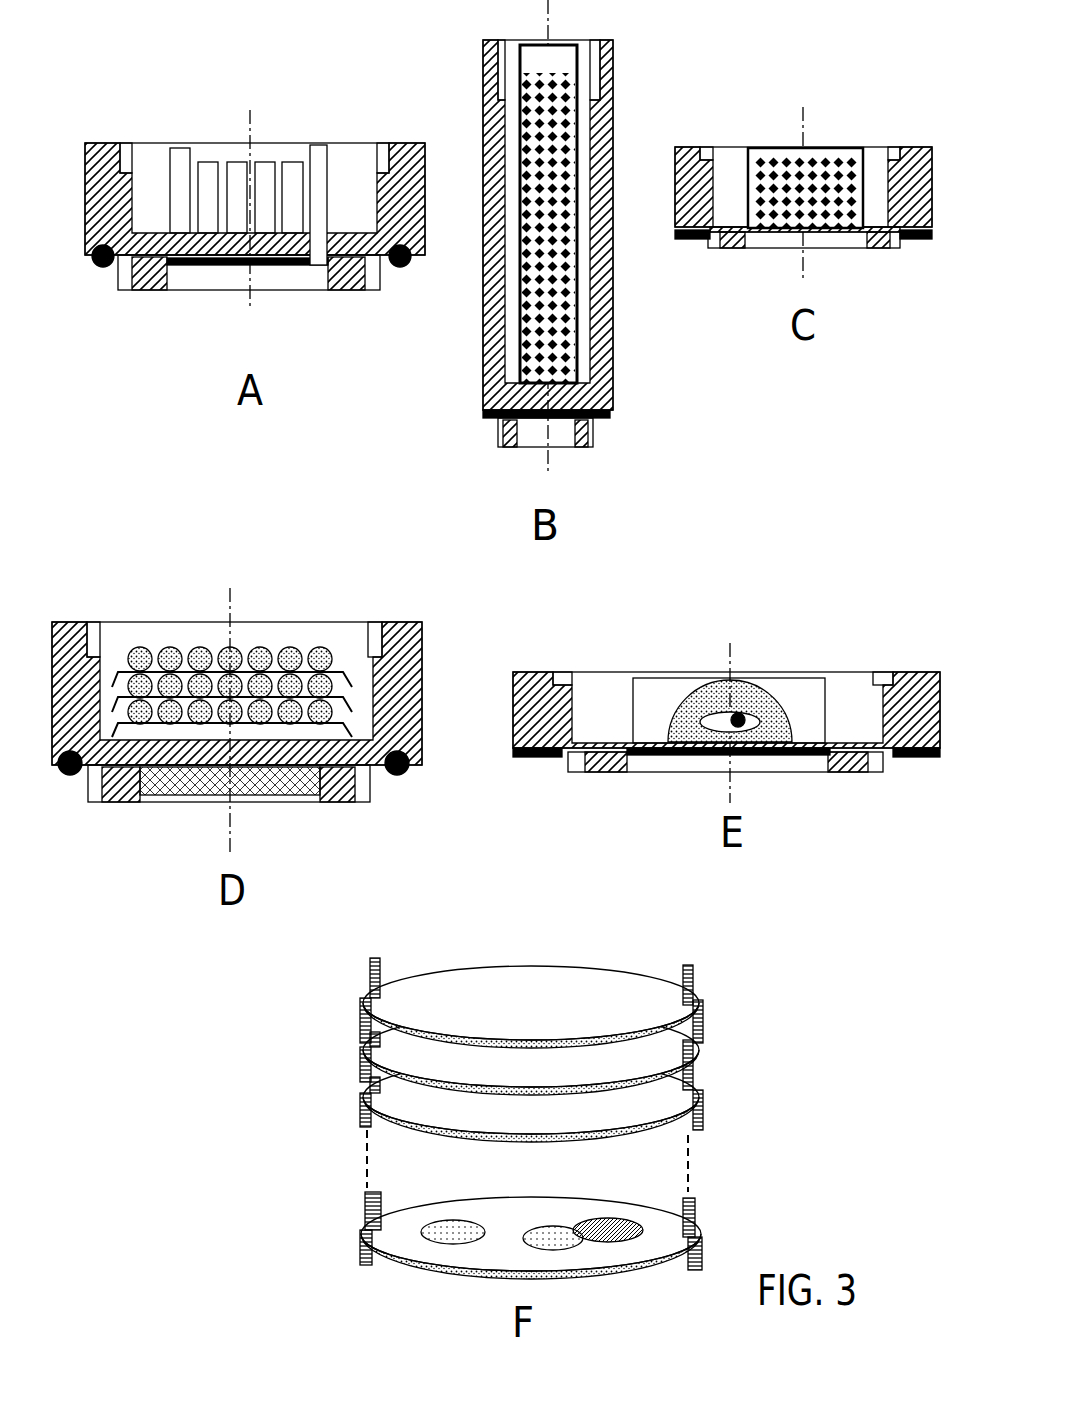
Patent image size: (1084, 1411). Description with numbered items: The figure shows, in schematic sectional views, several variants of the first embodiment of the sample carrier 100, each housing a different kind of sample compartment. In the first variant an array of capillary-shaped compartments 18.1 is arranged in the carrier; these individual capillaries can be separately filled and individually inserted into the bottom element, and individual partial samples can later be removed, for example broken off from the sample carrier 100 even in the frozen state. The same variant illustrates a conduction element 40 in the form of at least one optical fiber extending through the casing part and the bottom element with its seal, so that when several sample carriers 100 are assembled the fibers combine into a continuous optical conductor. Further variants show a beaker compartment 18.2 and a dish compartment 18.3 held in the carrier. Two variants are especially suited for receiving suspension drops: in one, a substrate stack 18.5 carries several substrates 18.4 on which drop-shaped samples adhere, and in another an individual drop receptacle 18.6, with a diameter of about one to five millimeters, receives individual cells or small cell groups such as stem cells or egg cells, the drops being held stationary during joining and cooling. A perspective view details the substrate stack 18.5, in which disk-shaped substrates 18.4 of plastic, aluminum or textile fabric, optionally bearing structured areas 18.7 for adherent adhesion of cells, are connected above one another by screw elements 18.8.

The sample carrier 100 is at (303, 104).
The capillary-shaped compartments 18.1 is at (178, 152).
The conduction element 40 is at (318, 165).
The beaker compartment 18.2 is at (543, 52).
The dish compartment 18.3 is at (843, 156).
The substrates 18.4 is at (118, 670).
The substrate stack 18.5 is at (334, 641).
The individual drop receptacle 18.6 is at (653, 742).
The structured areas 18.7 is at (430, 1240).
The screw elements 18.8 is at (368, 990).